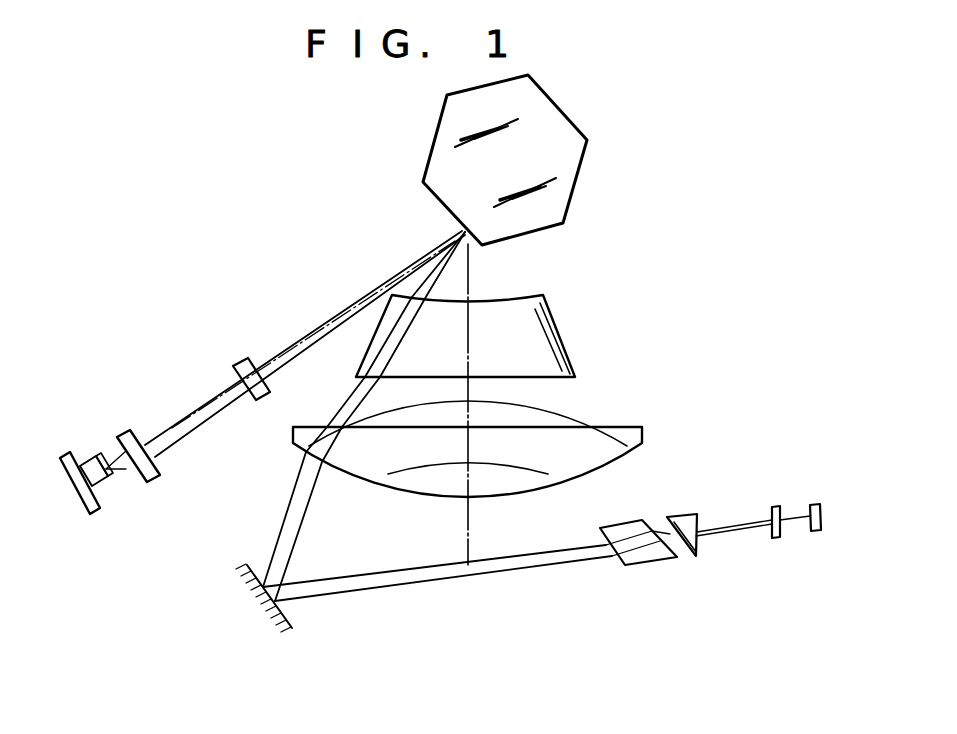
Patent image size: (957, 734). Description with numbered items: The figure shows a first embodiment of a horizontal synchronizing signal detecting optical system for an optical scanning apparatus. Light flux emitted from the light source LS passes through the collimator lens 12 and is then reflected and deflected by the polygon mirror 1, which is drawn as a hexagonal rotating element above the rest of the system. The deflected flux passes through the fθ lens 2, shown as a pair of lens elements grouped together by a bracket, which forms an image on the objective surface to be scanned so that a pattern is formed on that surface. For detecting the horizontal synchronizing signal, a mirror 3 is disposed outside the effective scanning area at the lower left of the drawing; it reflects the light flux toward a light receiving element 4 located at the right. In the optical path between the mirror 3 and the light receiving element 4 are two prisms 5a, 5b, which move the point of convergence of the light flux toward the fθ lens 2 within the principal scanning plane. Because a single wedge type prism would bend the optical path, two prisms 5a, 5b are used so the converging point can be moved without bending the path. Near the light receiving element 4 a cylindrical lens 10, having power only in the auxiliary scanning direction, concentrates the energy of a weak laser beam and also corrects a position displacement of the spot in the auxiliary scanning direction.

The polygon mirror 1 is at (582, 172).
The fθ lens 2 is at (653, 373).
The mirror 3 is at (284, 618).
The light receiving element 4 is at (814, 533).
The prism 5a is at (616, 526).
The prism 5b is at (687, 518).
The cylindrical lens 10 is at (776, 505).
The collimator lens 12 is at (160, 477).
The light source LS is at (100, 510).